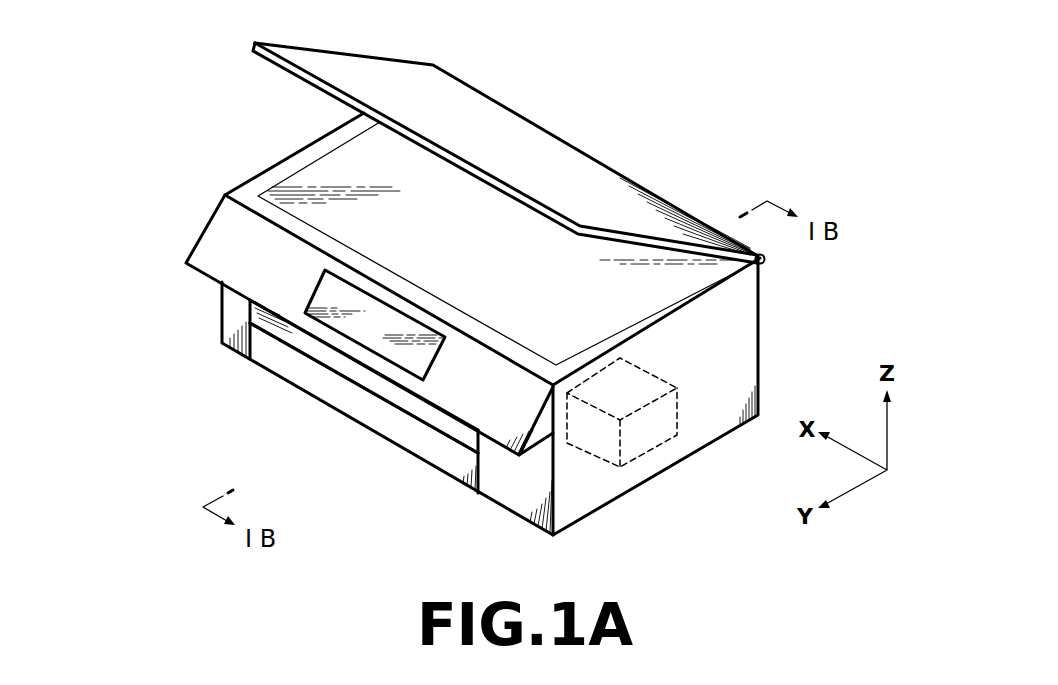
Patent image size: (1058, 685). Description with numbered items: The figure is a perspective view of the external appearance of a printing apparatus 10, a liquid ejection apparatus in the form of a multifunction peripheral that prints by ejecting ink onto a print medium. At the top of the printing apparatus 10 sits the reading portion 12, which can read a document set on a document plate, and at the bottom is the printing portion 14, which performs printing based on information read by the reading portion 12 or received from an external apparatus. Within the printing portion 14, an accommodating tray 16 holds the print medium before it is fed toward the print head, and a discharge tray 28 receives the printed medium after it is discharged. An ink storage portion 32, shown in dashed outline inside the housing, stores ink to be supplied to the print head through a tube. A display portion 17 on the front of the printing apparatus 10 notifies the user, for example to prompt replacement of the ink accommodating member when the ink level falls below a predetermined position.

The printing apparatus 10 is at (519, 283).
The reading portion 12 is at (517, 135).
The printing portion 14 is at (762, 333).
The accommodating tray 16 is at (350, 402).
The display portion 17 is at (364, 333).
The discharge tray 28 is at (408, 403).
The ink storage portion 32 is at (652, 437).